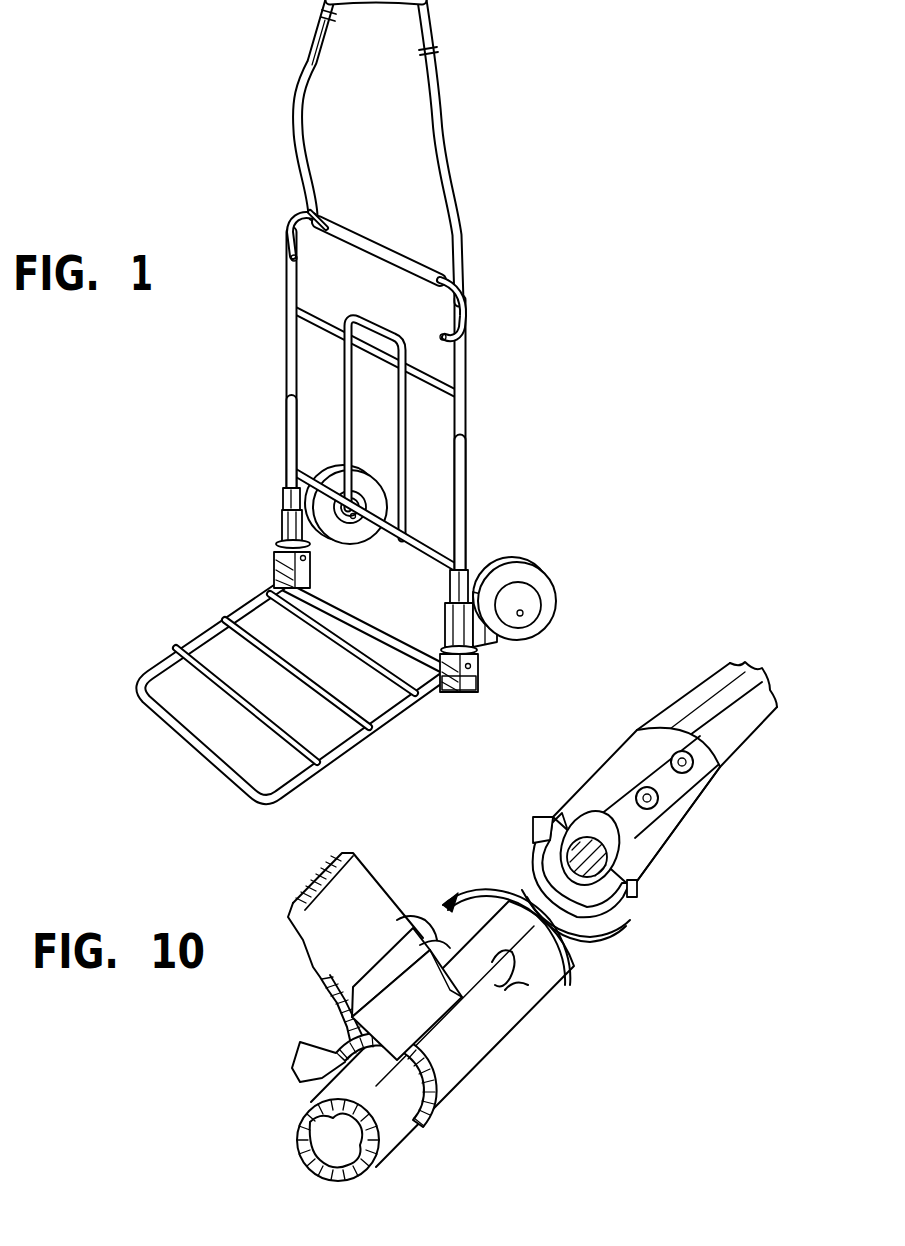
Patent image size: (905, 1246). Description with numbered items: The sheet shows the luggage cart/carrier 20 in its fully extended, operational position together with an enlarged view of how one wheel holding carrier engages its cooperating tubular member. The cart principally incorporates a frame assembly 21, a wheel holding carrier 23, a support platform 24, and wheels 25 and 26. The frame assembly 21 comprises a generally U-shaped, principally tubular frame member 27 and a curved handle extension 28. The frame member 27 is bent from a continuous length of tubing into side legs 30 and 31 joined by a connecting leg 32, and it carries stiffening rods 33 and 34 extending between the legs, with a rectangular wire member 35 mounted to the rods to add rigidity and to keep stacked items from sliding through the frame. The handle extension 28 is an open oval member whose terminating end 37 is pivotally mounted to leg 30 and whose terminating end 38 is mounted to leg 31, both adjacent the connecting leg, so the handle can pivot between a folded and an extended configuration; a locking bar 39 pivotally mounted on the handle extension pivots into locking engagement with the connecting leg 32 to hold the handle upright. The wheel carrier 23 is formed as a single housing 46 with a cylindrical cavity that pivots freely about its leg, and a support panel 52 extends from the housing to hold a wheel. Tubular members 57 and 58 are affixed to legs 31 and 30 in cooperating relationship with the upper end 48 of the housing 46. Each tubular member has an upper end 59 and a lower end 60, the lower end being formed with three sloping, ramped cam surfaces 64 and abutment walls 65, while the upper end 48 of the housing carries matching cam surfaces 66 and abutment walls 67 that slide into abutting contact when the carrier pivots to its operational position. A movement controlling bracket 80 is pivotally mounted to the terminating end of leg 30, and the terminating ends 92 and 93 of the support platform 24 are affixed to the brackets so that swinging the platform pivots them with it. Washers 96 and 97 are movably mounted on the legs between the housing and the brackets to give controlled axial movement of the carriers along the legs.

In FIG. 1, the luggage cart/carrier 20 is at (443, 82).
In FIG. 1, the frame assembly 21 is at (466, 460).
In FIG. 1, the wheel holding carrier 23 is at (340, 524).
In FIG. 1, the support platform 24 is at (183, 637).
In FIG. 1, the wheel 25 is at (514, 597).
In FIG. 1, the wheel 26 is at (360, 474).
In FIG. 1, the frame member 27 is at (285, 360).
In FIG. 1, the handle extension 28 is at (306, 69).
In FIG. 1, the side leg 30 is at (285, 441).
In FIG. 10, the side leg 30 is at (700, 697).
In FIG. 1, the side leg 31 is at (467, 386).
In FIG. 1, the connecting leg 32 is at (392, 256).
In FIG. 1, the stiffening rod 33 is at (296, 298).
In FIG. 1, the stiffening rod 34 is at (452, 556).
In FIG. 1, the wire member 35 is at (403, 494).
In FIG. 1, the terminating end 37 is at (303, 238).
In FIG. 1, the terminating end 38 is at (453, 328).
In FIG. 1, the locking bar 39 is at (320, 216).
In FIG. 1, the housing 46 is at (290, 525).
In FIG. 10, the housing 46 is at (470, 1073).
In FIG. 10, the upper end 48 is at (463, 957).
In FIG. 10, the support panel 52 is at (305, 912).
In FIG. 1, the tubular member 57 is at (476, 560).
In FIG. 1, the tubular member 58 is at (282, 502).
In FIG. 10, the tubular member 58 is at (627, 763).
In FIG. 10, the upper end 59 is at (720, 767).
In FIG. 10, the lower end 60 is at (546, 826).
In FIG. 10, the cam surface 64 is at (612, 866).
In FIG. 10, the abutment wall 65 is at (560, 818).
In FIG. 10, the cam surface 66 is at (500, 975).
In FIG. 10, the abutment wall 67 is at (412, 920).
In FIG. 1, the movement controlling bracket 80 is at (308, 576).
In FIG. 1, the terminating end 92 is at (273, 598).
In FIG. 1, the terminating end 93 is at (455, 681).
In FIG. 1, the washer 96 is at (276, 544).
In FIG. 1, the washer 97 is at (478, 652).